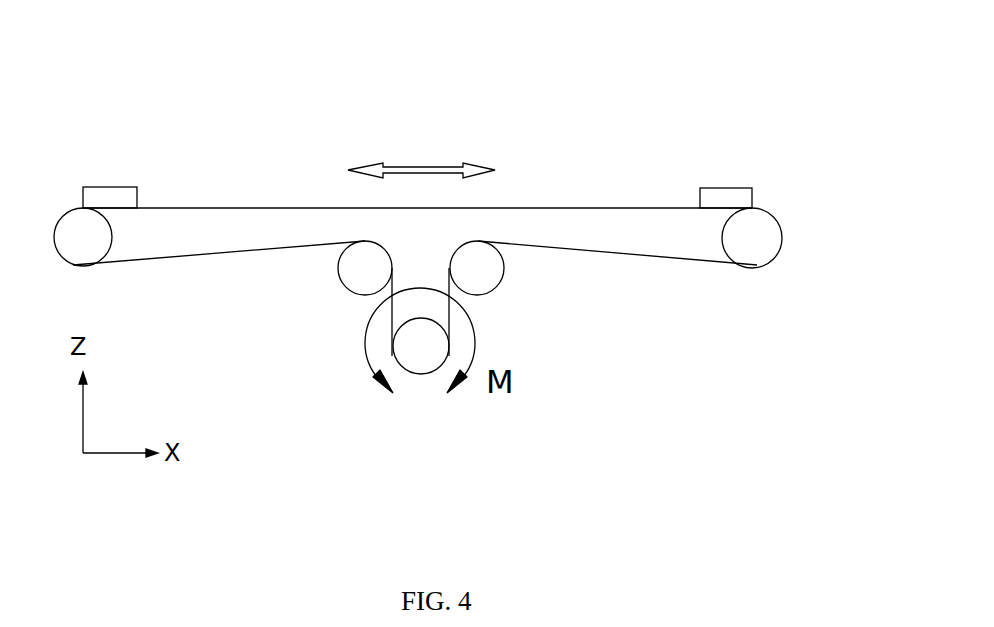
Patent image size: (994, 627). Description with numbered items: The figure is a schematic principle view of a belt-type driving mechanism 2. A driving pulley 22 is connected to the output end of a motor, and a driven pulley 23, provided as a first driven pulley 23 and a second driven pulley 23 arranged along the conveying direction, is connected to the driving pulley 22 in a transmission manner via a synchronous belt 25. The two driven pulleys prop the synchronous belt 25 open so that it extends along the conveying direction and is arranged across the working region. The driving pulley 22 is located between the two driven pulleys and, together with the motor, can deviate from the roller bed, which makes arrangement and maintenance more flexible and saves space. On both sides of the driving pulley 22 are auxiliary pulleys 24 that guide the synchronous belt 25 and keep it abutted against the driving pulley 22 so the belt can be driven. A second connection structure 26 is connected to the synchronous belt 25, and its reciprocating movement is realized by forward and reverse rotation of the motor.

The belt-type driving mechanism 2 is at (333, 404).
The driving pulley 22 is at (422, 363).
The driven pulley 23 is at (759, 250).
The auxiliary pulley 24 is at (487, 280).
The synchronous belt 25 is at (571, 200).
The second connection structure 26 is at (734, 189).